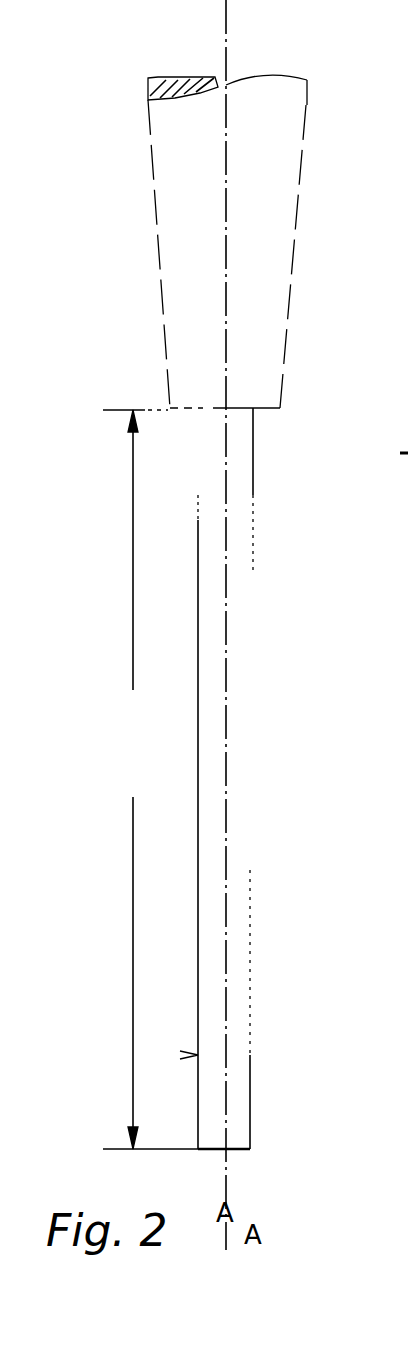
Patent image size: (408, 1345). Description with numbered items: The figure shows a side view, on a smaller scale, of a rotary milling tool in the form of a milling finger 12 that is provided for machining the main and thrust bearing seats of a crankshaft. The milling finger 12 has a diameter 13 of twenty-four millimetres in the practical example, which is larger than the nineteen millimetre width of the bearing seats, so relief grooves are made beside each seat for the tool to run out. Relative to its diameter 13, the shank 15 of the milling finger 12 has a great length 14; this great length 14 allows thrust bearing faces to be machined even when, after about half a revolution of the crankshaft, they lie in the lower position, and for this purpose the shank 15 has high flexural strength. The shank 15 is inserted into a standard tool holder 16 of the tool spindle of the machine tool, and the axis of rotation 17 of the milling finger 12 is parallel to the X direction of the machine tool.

The milling finger 12 is at (263, 668).
The diameter 13 is at (252, 1055).
The length 14 is at (150, 779).
The shank 15 is at (242, 855).
The tool holder 16 is at (281, 230).
The axis of rotation 17 is at (232, 32).